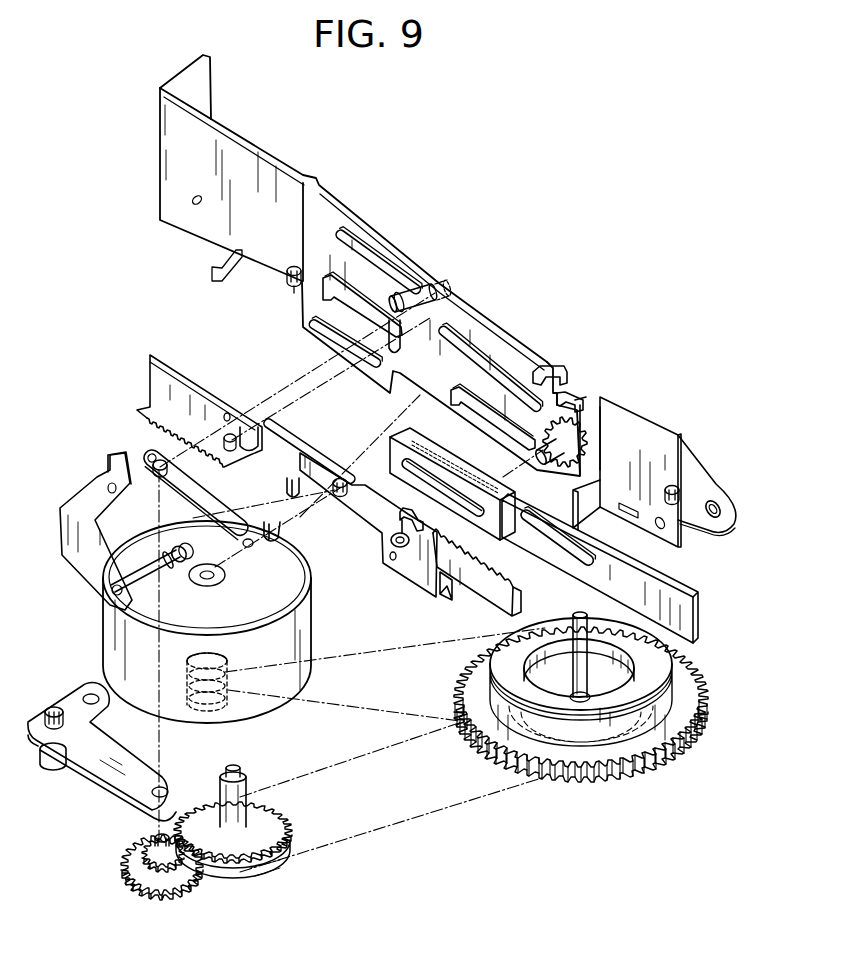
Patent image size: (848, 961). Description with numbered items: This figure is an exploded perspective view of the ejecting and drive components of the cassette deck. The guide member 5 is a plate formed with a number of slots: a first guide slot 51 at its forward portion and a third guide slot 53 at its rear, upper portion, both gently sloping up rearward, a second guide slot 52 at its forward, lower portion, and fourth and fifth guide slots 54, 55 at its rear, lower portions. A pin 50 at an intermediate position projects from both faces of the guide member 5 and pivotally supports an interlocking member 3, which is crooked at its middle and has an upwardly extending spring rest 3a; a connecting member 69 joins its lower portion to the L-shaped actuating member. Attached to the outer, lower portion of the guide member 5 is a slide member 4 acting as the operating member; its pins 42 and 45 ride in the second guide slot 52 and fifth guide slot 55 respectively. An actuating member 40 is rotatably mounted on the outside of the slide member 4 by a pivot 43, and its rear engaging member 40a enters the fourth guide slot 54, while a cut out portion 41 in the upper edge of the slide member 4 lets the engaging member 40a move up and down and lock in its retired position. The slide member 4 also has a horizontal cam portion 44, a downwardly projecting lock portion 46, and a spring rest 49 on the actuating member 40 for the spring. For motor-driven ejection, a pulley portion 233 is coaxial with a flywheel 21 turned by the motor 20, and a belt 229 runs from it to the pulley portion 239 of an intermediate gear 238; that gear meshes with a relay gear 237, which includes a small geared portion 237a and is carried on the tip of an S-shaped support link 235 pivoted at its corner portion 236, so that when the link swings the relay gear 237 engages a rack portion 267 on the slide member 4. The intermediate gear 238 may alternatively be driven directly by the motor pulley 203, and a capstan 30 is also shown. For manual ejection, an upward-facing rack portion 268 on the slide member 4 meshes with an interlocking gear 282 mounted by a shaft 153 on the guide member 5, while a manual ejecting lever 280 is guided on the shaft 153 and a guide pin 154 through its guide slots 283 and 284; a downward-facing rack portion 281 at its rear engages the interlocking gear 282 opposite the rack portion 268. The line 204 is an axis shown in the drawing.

The guide member 5 is at (273, 171).
The third guide slot 53 is at (393, 267).
The fourth guide slot 54 is at (343, 288).
The fifth guide slot 55 is at (312, 335).
The first guide slot 51 is at (506, 366).
The second guide slot 52 is at (478, 397).
The pin 50 is at (420, 297).
The shaft 153 is at (553, 372).
The interlocking gear 282 is at (583, 413).
The guide pin 154 is at (678, 482).
The rack portion 267 is at (173, 417).
The pin 45 is at (242, 417).
The cut out portion 41 is at (275, 425).
The engaging member 40a is at (157, 457).
The spring rest 3a is at (108, 464).
The pivot 43 is at (338, 479).
The rack portion 281 is at (420, 432).
The guide slot 283 is at (395, 480).
The actuating member 40 is at (214, 503).
The lock portion 46 is at (292, 497).
The spring rest 49 is at (282, 537).
The interlocking member 3 is at (93, 562).
The connecting member 69 is at (168, 572).
The slide member 4 is at (372, 515).
The pin 42 is at (412, 556).
The horizontal cam portion 44 is at (447, 586).
The rack portion 268 is at (468, 575).
The guide slot 284 is at (555, 535).
The manual ejecting lever 280 is at (655, 588).
The capstan 30 is at (575, 625).
The motor 20 is at (295, 637).
The motor pulley 203 is at (228, 708).
The axis line 204 is at (407, 645).
The flywheel 21 is at (690, 660).
The pulley portion 233 is at (662, 770).
The belt 229 is at (465, 808).
The corner portion 236 is at (54, 710).
The support link 235 is at (108, 765).
The intermediate gear 238 is at (272, 818).
The pulley portion 239 is at (275, 868).
The relay gear 237 is at (192, 886).
The geared portion 237a is at (157, 893).